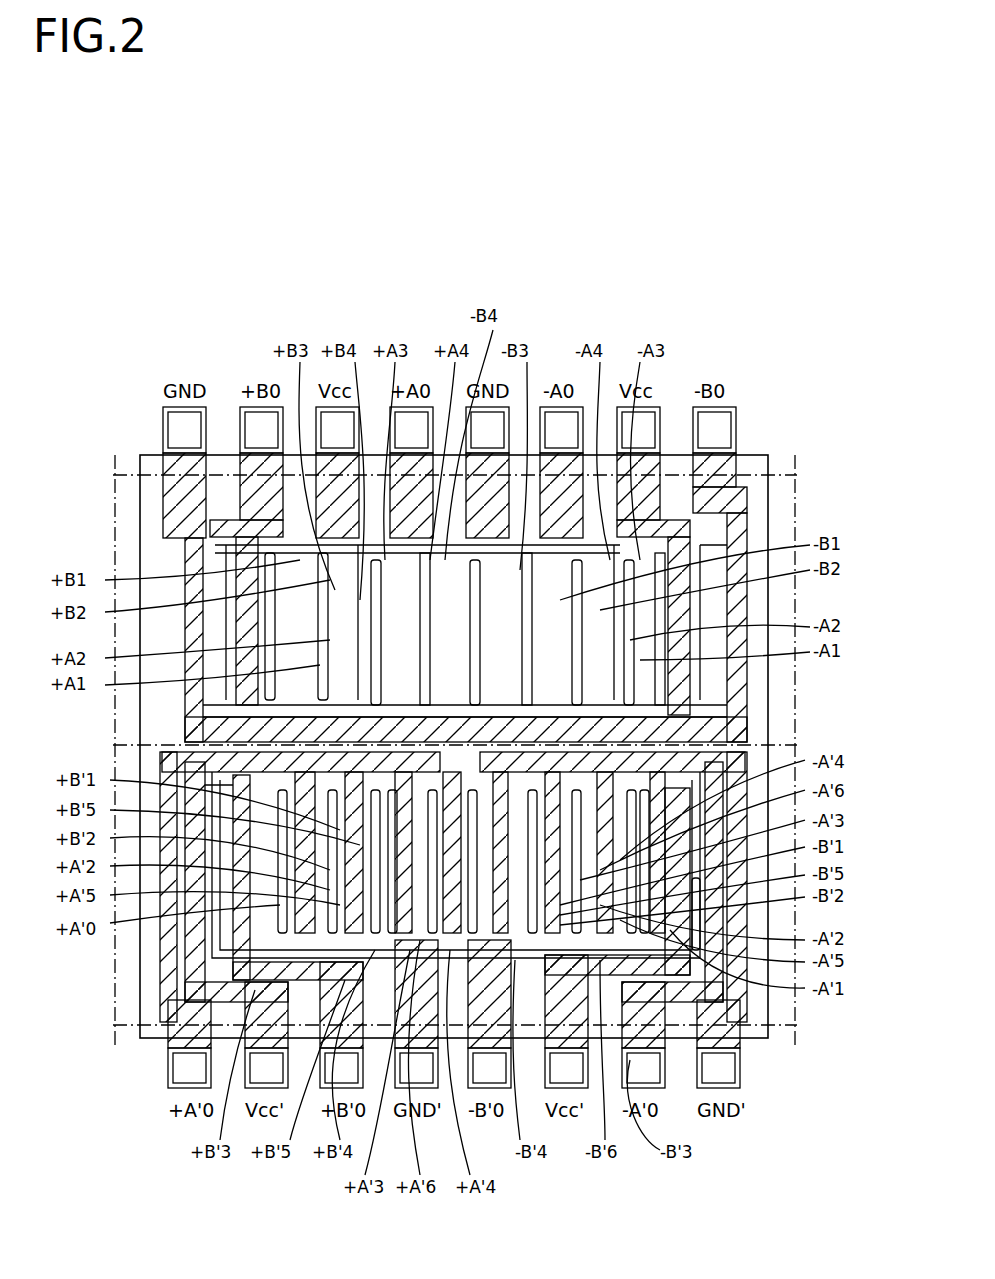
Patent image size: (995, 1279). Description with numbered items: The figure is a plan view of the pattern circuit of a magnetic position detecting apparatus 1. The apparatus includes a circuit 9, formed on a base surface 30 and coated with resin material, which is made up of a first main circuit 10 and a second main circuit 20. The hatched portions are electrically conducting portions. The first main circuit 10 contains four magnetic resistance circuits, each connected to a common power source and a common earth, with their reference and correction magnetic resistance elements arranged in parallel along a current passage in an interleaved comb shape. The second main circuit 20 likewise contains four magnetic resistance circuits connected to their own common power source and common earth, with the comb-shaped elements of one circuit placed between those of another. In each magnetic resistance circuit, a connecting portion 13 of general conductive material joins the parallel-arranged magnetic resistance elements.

The magnetic position detecting apparatus 1 is at (798, 322).
The circuit 9 is at (805, 495).
The first main circuit 10 is at (797, 712).
The connecting portion 13 is at (672, 380).
The second main circuit 20 is at (798, 1028).
The base surface 30 is at (766, 455).